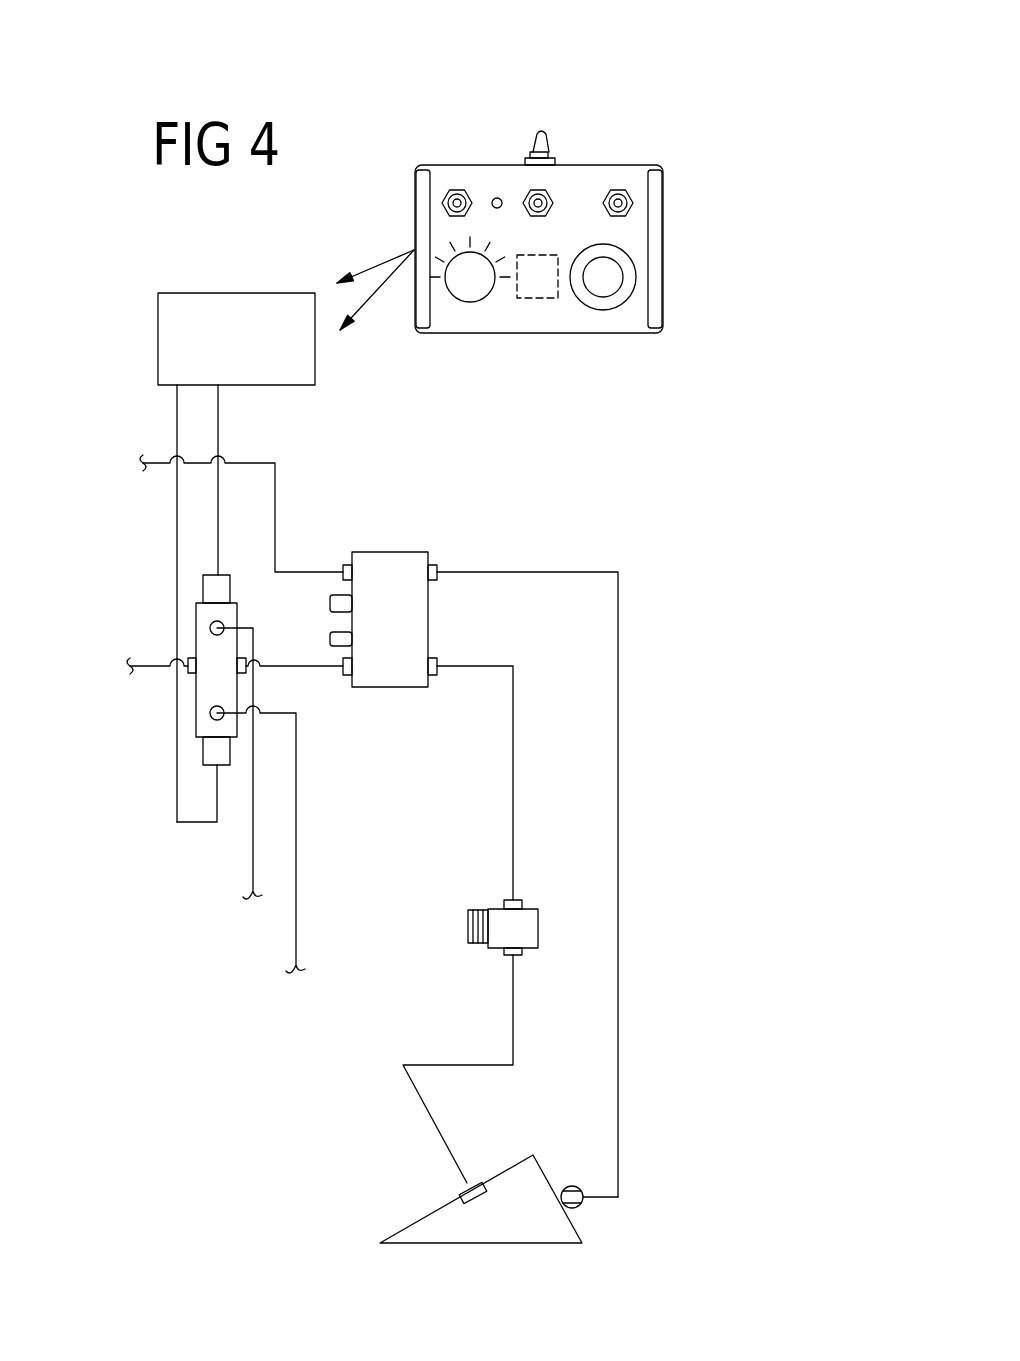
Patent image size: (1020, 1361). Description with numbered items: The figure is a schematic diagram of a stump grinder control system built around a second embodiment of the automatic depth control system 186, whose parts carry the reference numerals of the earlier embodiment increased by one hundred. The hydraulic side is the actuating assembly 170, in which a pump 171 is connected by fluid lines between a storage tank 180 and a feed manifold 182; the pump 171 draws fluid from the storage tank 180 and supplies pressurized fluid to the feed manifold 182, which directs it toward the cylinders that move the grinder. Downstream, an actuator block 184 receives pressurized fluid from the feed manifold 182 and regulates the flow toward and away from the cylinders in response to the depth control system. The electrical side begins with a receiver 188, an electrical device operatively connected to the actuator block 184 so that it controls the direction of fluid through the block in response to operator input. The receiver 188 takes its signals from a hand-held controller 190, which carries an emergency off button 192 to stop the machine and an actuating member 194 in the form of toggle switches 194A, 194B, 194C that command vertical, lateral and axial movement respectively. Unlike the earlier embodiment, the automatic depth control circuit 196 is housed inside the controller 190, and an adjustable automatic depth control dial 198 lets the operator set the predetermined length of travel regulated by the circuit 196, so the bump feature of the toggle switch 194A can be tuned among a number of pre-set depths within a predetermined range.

The actuating assembly 170 is at (158, 561).
The pump 171 is at (498, 913).
The storage tank 180 is at (495, 1235).
The feed manifold 182 is at (378, 562).
The actuator block 184 is at (198, 632).
The automatic depth control system 186 is at (142, 294).
The receiver 188 is at (157, 337).
The controller 190 is at (585, 352).
The emergency off button 192 is at (603, 303).
The actuating member 194 is at (546, 116).
The toggle switch 194A is at (457, 192).
The toggle switch 194B is at (536, 192).
The toggle switch 194C is at (622, 192).
The automatic depth control circuit 196 is at (537, 300).
The adjustable automatic depth control dial 198 is at (473, 292).